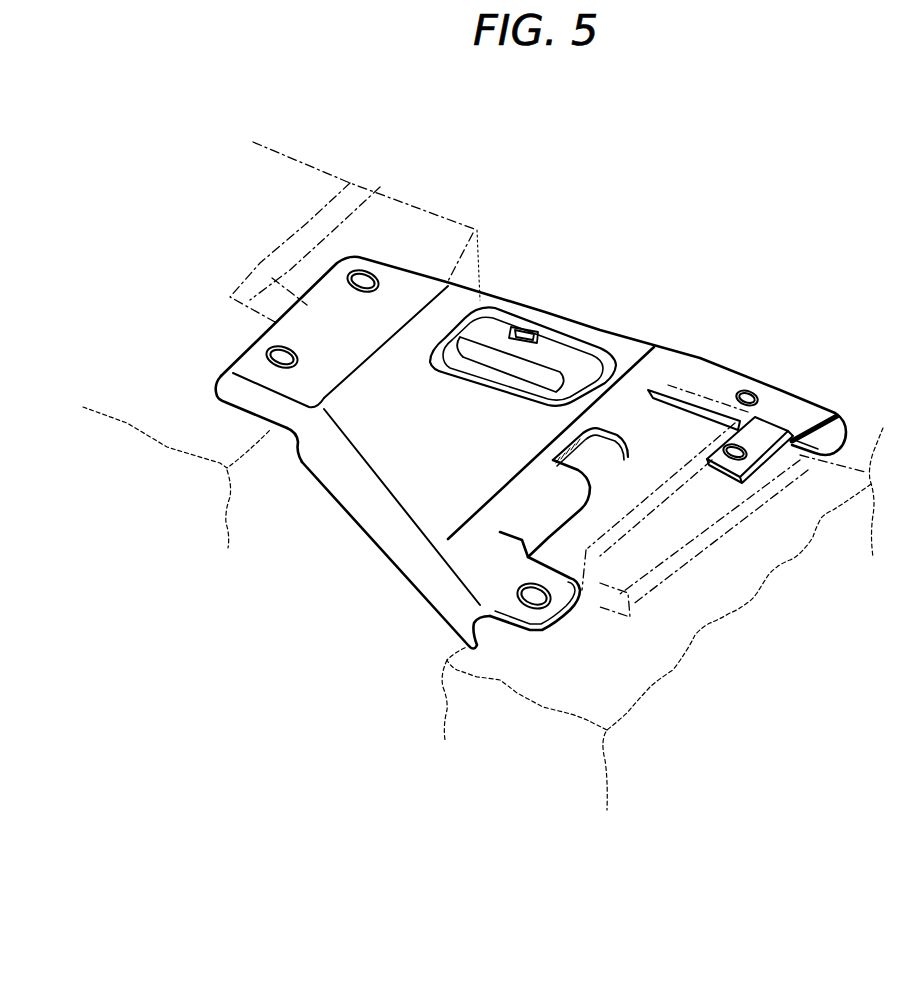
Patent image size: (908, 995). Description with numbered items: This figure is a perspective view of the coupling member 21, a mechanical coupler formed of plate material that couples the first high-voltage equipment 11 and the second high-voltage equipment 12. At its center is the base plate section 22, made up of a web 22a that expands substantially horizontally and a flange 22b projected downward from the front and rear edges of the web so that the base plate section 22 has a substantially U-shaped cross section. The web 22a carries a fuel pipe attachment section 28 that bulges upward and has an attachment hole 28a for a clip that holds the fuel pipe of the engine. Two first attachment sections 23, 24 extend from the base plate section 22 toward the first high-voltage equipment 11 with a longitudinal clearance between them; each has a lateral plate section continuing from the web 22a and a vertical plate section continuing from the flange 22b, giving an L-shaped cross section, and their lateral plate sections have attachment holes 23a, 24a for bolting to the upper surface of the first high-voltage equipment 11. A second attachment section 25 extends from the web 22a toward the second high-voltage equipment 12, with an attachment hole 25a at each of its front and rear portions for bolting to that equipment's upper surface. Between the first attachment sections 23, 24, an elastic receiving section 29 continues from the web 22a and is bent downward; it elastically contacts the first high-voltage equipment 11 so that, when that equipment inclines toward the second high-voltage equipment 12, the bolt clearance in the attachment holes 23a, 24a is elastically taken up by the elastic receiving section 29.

The first high-voltage equipment 11 is at (489, 597).
The second high-voltage equipment 12 is at (457, 217).
The coupling member 21 is at (623, 337).
The base plate section 22 is at (383, 488).
The web 22a is at (445, 297).
The flange 22b is at (320, 470).
The first attachment section 23 is at (492, 573).
The attachment hole 23a is at (535, 603).
The first attachment section 24 is at (710, 375).
The attachment hole 24a is at (757, 409).
The second attachment section 25 is at (277, 280).
The attachment hole 25a is at (385, 275).
The fuel pipe attachment section 28 is at (488, 366).
The attachment hole 28a is at (547, 330).
The elastic receiving section 29 is at (652, 438).